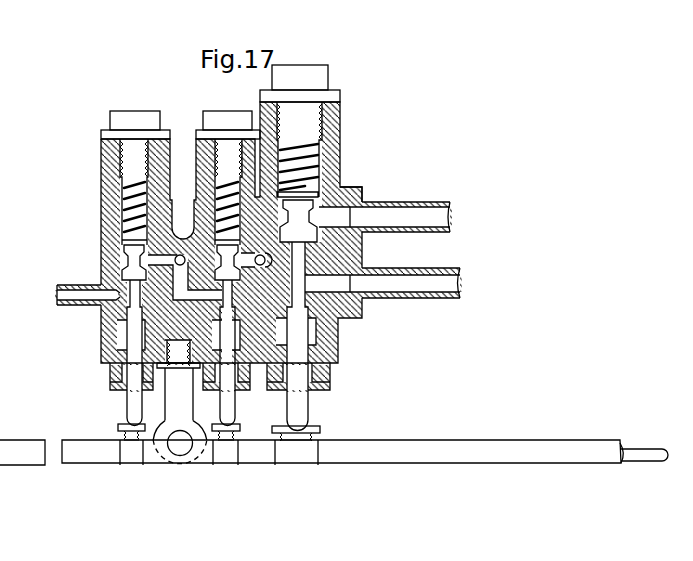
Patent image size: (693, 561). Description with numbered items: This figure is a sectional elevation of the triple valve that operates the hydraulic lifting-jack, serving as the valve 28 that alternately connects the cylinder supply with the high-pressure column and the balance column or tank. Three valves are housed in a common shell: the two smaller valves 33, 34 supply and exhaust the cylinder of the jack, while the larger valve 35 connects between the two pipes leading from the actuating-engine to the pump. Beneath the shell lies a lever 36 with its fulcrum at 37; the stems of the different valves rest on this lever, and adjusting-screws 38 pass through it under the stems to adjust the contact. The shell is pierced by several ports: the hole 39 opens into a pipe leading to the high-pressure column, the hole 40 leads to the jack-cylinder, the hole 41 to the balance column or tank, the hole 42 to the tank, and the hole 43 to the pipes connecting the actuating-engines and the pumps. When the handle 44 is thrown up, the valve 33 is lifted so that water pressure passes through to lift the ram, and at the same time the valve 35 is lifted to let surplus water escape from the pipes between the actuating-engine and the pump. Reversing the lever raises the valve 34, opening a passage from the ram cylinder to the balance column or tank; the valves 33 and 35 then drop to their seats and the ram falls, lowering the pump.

The valve 28 is at (258, 220).
The valve 33 is at (181, 219).
The valve 34 is at (120, 266).
The valve 35 is at (302, 214).
The lever 36 is at (339, 452).
The fulcrum 37 is at (178, 440).
The adjusting-screws 38 is at (232, 429).
The hole 39 is at (258, 277).
The hole 40 is at (185, 277).
The hole 41 is at (75, 298).
The hole 42 is at (393, 283).
The hole 43 is at (402, 217).
The handle 44 is at (644, 441).